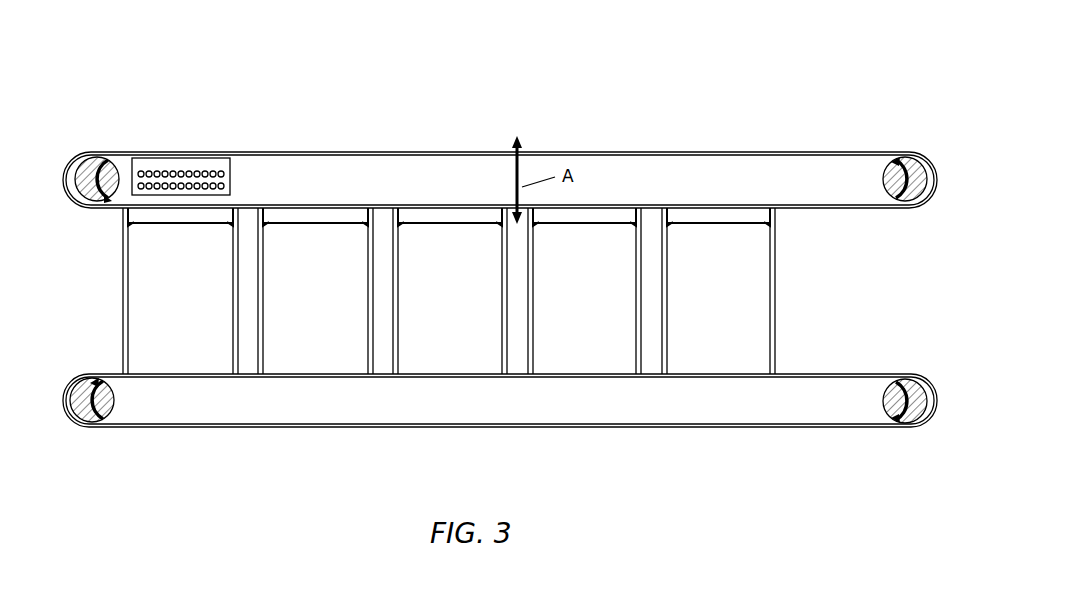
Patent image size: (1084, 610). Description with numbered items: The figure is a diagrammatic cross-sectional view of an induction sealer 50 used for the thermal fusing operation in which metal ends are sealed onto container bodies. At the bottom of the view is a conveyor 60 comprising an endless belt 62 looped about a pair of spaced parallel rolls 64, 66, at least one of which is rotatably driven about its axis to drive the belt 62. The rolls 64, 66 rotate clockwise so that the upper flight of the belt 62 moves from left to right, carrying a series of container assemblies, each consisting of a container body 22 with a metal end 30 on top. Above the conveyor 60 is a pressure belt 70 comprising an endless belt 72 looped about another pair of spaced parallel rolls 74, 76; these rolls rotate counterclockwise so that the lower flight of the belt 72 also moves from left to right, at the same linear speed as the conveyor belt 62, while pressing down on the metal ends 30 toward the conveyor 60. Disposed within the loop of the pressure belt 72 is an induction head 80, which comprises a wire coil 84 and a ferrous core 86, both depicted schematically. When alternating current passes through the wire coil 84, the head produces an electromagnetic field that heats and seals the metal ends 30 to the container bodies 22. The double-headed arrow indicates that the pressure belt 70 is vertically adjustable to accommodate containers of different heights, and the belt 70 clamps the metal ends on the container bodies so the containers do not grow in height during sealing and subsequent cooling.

The induction sealer 50 is at (818, 65).
The pressure belt 70 is at (500, 141).
The endless belt 72 is at (622, 152).
The roll 74 is at (97, 168).
The roll 76 is at (893, 175).
The induction head 80 is at (208, 147).
The wire coil 84 is at (222, 174).
The ferrous core 86 is at (225, 186).
The metal end 30 is at (725, 222).
The container body 22 is at (485, 271).
The conveyor 60 is at (500, 418).
The endless belt 62 is at (668, 427).
The roll 64 is at (100, 403).
The roll 66 is at (898, 393).